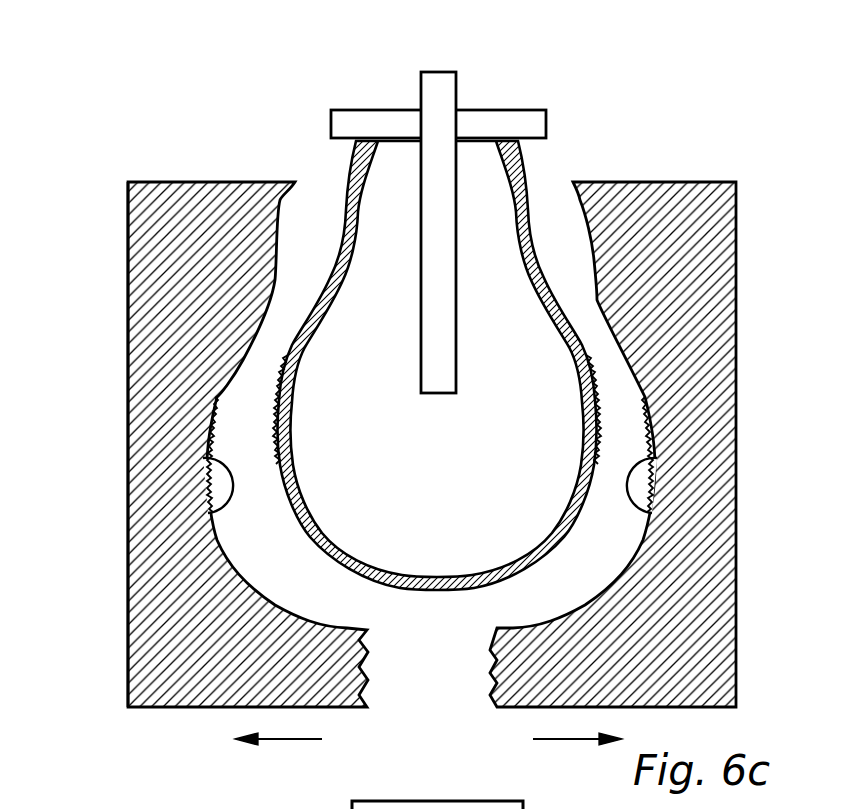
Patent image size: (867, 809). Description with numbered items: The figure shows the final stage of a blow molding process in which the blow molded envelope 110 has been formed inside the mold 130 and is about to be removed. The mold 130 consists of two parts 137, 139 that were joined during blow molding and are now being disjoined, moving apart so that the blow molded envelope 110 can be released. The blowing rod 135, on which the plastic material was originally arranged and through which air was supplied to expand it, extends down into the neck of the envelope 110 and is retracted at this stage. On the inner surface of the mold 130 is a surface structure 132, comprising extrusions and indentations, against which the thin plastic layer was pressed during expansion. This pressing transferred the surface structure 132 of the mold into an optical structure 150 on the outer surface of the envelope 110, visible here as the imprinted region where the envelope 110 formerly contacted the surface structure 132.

The blow molded envelope 110 is at (535, 215).
The mold 130 is at (175, 182).
The surface structure 132 is at (213, 513).
The blowing rod 135 is at (443, 72).
The first mold part 137 is at (128, 315).
The second mold part 139 is at (736, 253).
The optical structure 150 is at (279, 407).